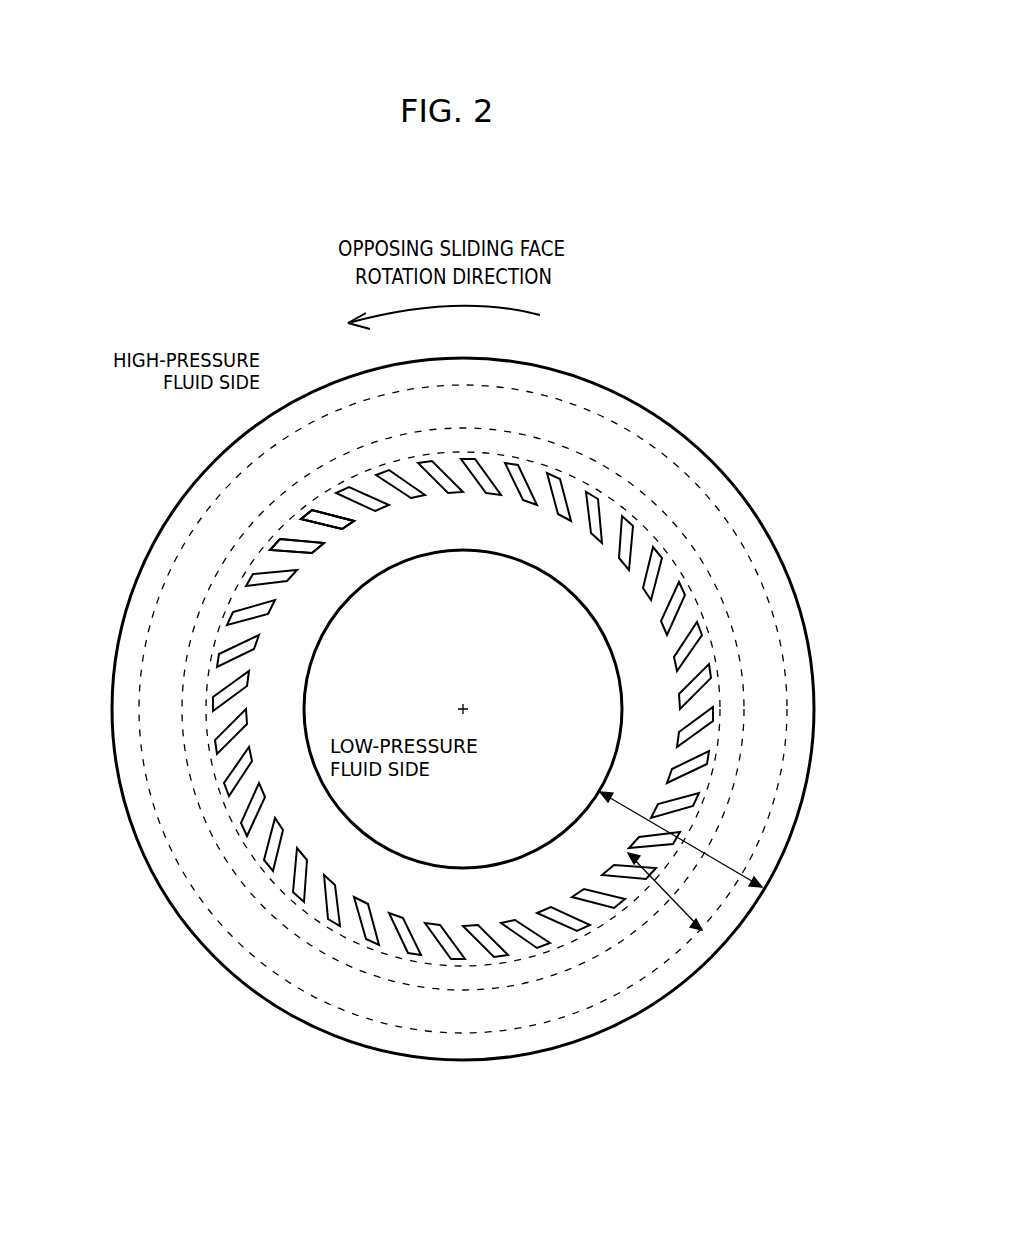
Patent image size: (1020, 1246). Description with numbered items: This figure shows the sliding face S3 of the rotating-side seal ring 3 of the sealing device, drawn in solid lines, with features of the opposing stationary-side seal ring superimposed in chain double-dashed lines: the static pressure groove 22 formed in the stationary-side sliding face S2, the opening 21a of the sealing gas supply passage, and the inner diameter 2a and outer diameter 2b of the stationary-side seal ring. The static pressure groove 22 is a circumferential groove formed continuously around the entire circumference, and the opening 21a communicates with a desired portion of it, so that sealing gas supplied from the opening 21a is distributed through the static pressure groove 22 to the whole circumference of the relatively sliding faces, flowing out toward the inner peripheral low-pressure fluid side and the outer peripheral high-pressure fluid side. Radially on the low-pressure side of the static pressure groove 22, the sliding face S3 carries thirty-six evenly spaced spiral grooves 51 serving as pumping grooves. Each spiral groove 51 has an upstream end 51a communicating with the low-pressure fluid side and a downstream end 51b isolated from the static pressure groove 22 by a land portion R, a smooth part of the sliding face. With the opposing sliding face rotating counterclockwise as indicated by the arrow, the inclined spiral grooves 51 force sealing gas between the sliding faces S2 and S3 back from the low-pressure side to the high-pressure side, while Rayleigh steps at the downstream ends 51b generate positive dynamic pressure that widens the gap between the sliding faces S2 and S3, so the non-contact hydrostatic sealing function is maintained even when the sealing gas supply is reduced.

The rotating-side seal ring 3 is at (590, 378).
The inner diameter of the stationary-side seal ring 2a is at (578, 900).
The outer diameter of the stationary-side seal ring 2b is at (667, 958).
The opening of the sealing gas supply passage 21a is at (465, 440).
The static pressure groove 22 is at (642, 503).
The spiral groove 51 is at (333, 515).
The upstream end of the spiral groove 51a is at (353, 525).
The downstream end of the spiral groove 51b is at (303, 517).
The sliding face of the stationary-side seal ring S2 is at (680, 900).
The sliding face of the rotating-side seal ring S3 is at (730, 866).
The land portion R is at (380, 468).